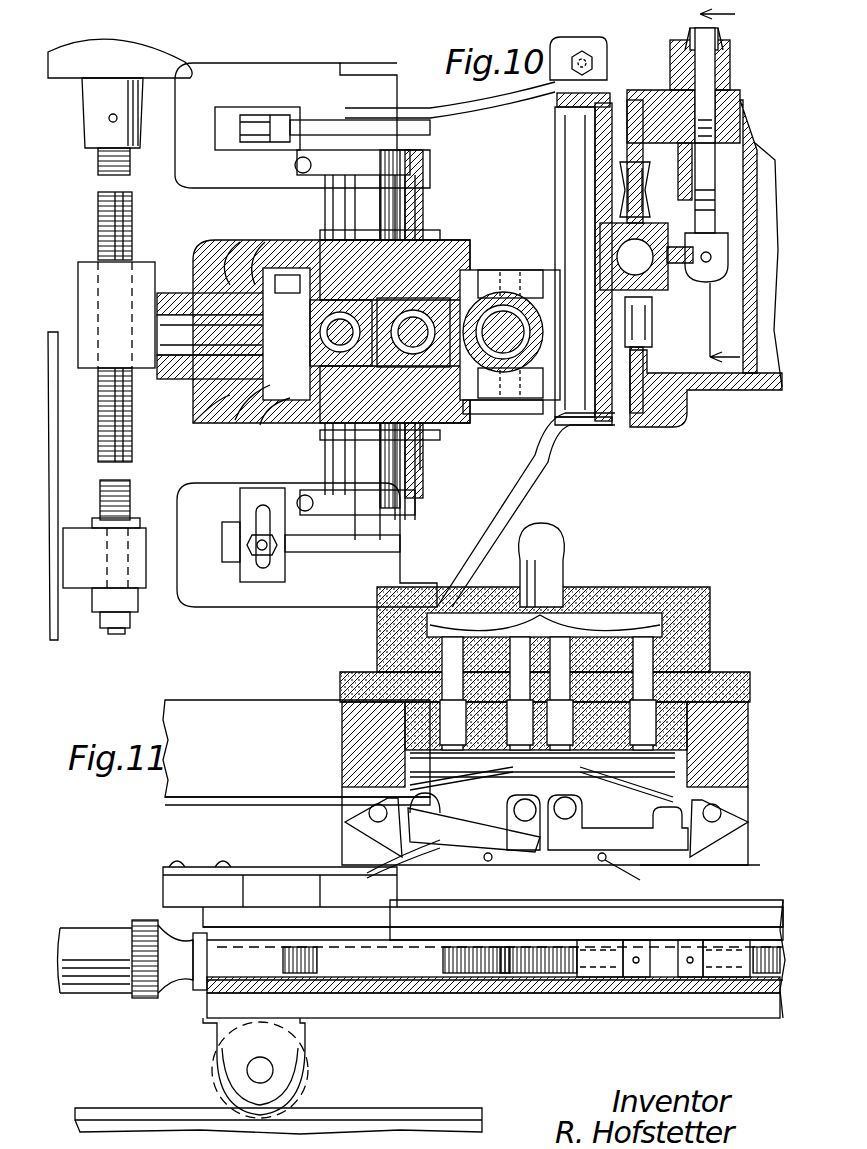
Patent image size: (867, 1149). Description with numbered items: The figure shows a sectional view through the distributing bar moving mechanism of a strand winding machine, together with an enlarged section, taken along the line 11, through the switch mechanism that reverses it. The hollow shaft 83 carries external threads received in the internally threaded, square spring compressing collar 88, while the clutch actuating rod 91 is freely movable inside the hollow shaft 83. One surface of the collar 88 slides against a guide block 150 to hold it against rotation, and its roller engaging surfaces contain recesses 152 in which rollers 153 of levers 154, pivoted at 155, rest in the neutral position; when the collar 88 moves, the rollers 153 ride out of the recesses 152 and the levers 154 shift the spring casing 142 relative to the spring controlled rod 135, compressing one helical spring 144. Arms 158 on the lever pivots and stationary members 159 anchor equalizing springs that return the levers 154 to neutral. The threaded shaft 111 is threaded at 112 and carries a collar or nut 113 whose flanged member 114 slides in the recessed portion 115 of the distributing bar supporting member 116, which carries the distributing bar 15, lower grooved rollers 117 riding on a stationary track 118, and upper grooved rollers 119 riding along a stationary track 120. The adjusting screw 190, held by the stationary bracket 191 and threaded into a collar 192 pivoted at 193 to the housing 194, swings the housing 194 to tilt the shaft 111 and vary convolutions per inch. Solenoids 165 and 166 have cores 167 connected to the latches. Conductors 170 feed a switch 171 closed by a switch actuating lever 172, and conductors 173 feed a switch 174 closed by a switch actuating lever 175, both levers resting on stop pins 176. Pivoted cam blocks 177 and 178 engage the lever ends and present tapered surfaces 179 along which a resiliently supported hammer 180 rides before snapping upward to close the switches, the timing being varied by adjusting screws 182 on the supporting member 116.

In FIG. 10, the section line 11 is at (738, 182).
In FIG. 10, the distributing bar 15 is at (628, 257).
In FIG. 10, the hollow shaft 83 is at (325, 338).
In FIG. 10, the spring compressing collar 88 is at (318, 325).
In FIG. 10, the clutch actuating rod 91 is at (275, 332).
In FIG. 10, the threaded shaft 111 is at (516, 460).
In FIG. 10, the threads 112 is at (510, 310).
In FIG. 10, the collar or nut 113 is at (450, 280).
In FIG. 10, the flanged member 114 is at (573, 440).
In FIG. 10, the recessed portion 115 is at (590, 410).
In FIG. 10, the distributing bar supporting member 116 is at (700, 287).
In FIG. 11, the distributing bar supporting member 116 is at (458, 995).
In FIG. 10, the lower grooved rollers 117 is at (642, 347).
In FIG. 11, the lower grooved rollers 117 is at (217, 1072).
In FIG. 10, the stationary track 118 is at (670, 400).
In FIG. 10, the upper grooved rollers 119 is at (622, 177).
In FIG. 11, the upper grooved rollers 119 is at (330, 830).
In FIG. 10, the stationary track 120 is at (622, 130).
In FIG. 11, the stationary track 120 is at (212, 790).
In FIG. 10, the spring controlled rod 135 is at (420, 315).
In FIG. 10, the spring casing 142 is at (477, 406).
In FIG. 10, the helical spring 144 is at (442, 435).
In FIG. 10, the guide block 150 is at (215, 285).
In FIG. 10, the recesses 152 is at (271, 334).
In FIG. 10, the rollers 153 is at (290, 442).
In FIG. 10, the levers 154 is at (425, 215).
In FIG. 10, the pivot 155 is at (410, 200).
In FIG. 10, the arms 158 is at (295, 166).
In FIG. 10, the stationary members 159 is at (320, 236).
In FIG. 10, the solenoid 165 is at (223, 602).
In FIG. 10, the solenoid 166 is at (292, 62).
In FIG. 10, the cores 167 is at (320, 120).
In FIG. 11, the conductors 170 is at (500, 607).
In FIG. 11, the switch 171 is at (345, 752).
In FIG. 11, the switch actuating lever 172 is at (520, 852).
In FIG. 11, the conductors 173 is at (620, 605).
In FIG. 11, the switch 174 is at (680, 767).
In FIG. 10, the switch actuating lever 175 is at (725, 108).
In FIG. 11, the switch actuating lever 175 is at (600, 862).
In FIG. 10, the stop pins 176 is at (722, 178).
In FIG. 11, the stop pins 176 is at (498, 870).
In FIG. 11, the cam block 177 is at (345, 835).
In FIG. 11, the cam block 178 is at (740, 832).
In FIG. 11, the tapered surfaces 179 is at (728, 862).
In FIG. 11, the hammers 180 is at (435, 855).
In FIG. 11, the adjusting screws 182 is at (752, 995).
In FIG. 10, the adjusting screw 190 is at (100, 228).
In FIG. 10, the stationary bracket 191 is at (84, 575).
In FIG. 10, the collar 192 is at (150, 360).
In FIG. 10, the pivot 193 is at (172, 298).
In FIG. 10, the housing 194 is at (210, 412).